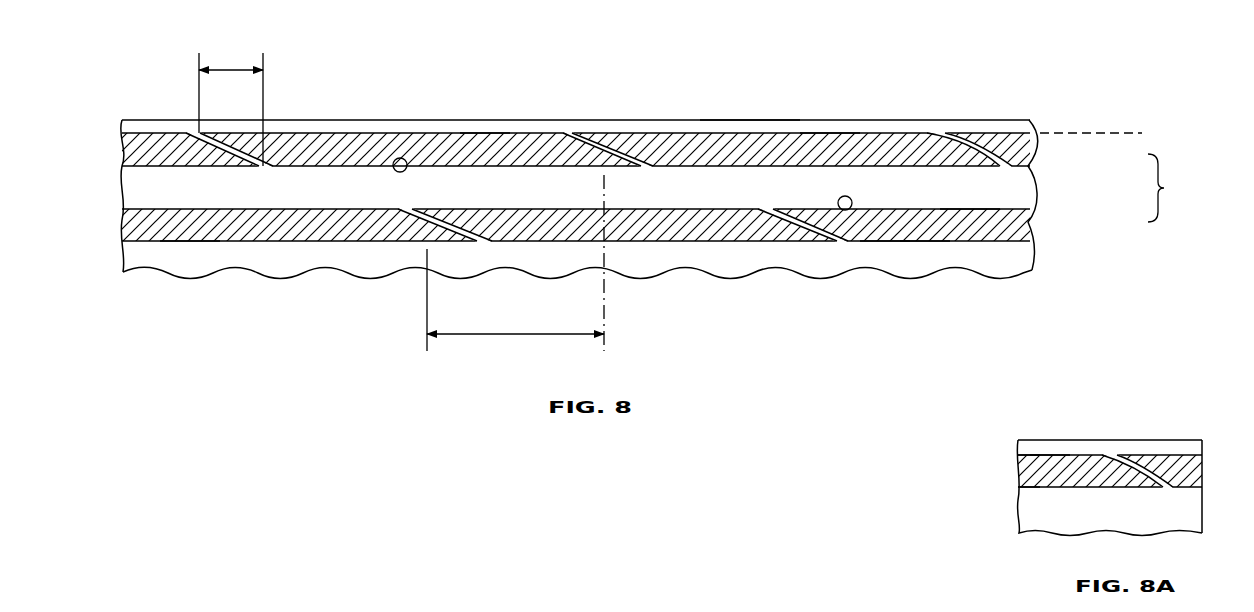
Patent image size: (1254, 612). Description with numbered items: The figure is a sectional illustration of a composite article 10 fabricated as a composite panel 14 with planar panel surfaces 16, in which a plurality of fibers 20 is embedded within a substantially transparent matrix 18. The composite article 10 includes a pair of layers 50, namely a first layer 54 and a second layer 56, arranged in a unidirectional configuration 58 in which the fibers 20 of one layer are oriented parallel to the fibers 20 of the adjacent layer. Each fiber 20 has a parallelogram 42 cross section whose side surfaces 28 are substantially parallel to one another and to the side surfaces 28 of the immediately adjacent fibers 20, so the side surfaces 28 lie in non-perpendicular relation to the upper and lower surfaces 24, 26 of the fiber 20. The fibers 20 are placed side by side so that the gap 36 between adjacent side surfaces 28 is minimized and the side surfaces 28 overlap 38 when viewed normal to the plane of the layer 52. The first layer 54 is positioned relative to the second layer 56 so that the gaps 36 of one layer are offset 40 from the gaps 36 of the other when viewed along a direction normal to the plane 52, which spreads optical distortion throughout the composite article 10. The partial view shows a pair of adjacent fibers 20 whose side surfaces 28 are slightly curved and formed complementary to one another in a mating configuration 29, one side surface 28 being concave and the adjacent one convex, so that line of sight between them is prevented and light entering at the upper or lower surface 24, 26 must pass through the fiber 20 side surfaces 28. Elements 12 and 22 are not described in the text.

In FIG. 8, the composite article 10 is at (131, 119).
In FIG. 8A, the composite article 10 is at (1205, 440).
In FIG. 8, the first layer 12 is at (162, 120).
In FIG. 8, the composite panel 14 is at (770, 120).
In FIG. 8, the panel surfaces 16 is at (730, 120).
In FIG. 8, the matrix 18 is at (1025, 262).
In FIG. 8A, the matrix 18 is at (1172, 512).
In FIG. 8, the fibers 20 is at (960, 232).
In FIG. 8, the layer surface 22 is at (822, 136).
In FIG. 8A, the layer surface 22 is at (1048, 457).
In FIG. 8, the upper surface 24 is at (487, 131).
In FIG. 8A, the upper surface 24 is at (1020, 452).
In FIG. 8, the lower surface 26 is at (397, 158).
In FIG. 8A, the lower surface 26 is at (1020, 488).
In FIG. 8, the side surfaces 28 is at (618, 141).
In FIG. 8A, the side surfaces 28 is at (1147, 458).
In FIG. 8, the mating configuration 29 is at (955, 140).
In FIG. 8A, the mating configuration 29 is at (1118, 462).
In FIG. 8, the gap 36 is at (563, 128).
In FIG. 8A, the gap 36 is at (1095, 452).
In FIG. 8, the overlap 38 is at (234, 68).
In FIG. 8, the offset 40 is at (505, 336).
In FIG. 8, the parallelogram 42 is at (322, 150).
In FIG. 8A, the parallelogram 42 is at (1110, 471).
In FIG. 8, the layers 50 is at (626, 187).
In FIG. 8A, the layers 50 is at (1195, 465).
In FIG. 8, the plane of the layer 52 is at (1095, 133).
In FIG. 8, the first layer 54 is at (1022, 155).
In FIG. 8, the second layer 56 is at (1020, 223).
In FIG. 8, the unidirectional configuration 58 is at (1169, 188).